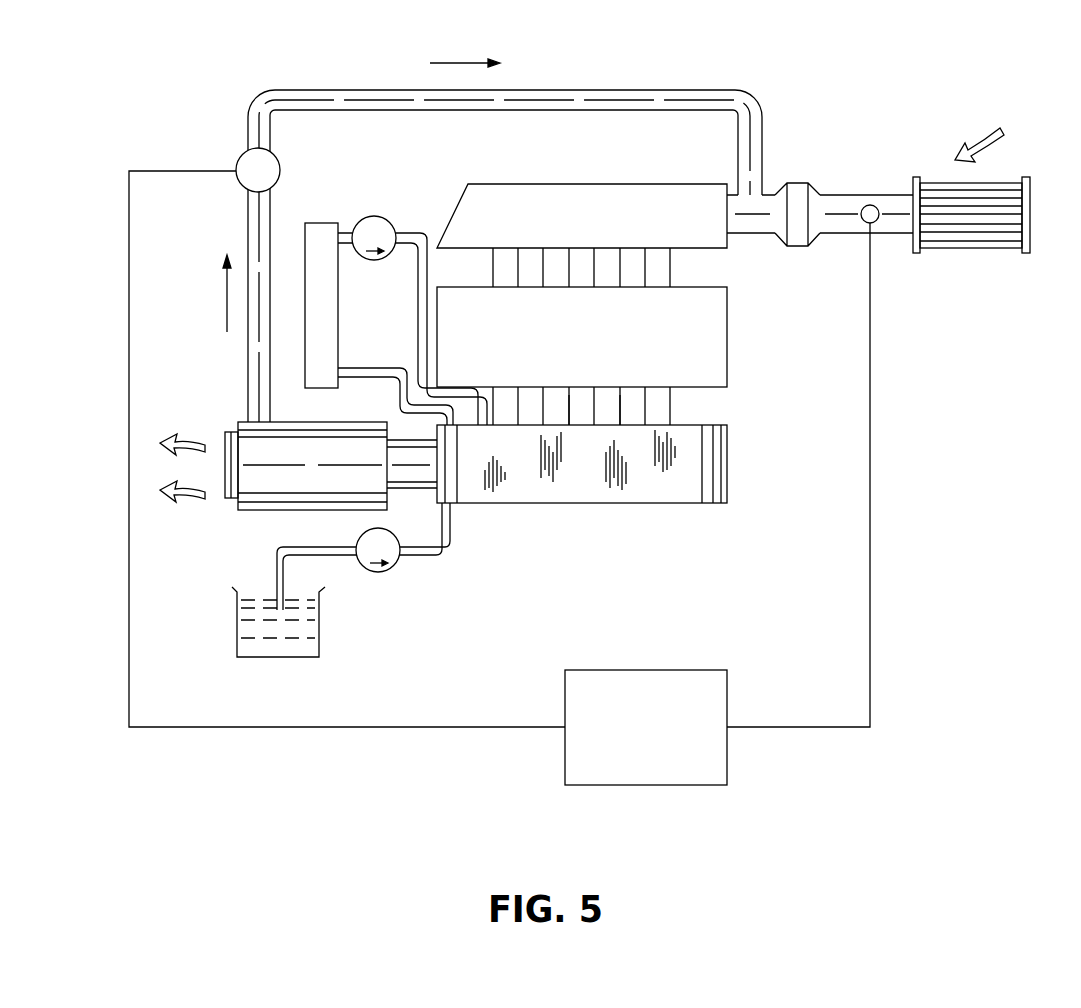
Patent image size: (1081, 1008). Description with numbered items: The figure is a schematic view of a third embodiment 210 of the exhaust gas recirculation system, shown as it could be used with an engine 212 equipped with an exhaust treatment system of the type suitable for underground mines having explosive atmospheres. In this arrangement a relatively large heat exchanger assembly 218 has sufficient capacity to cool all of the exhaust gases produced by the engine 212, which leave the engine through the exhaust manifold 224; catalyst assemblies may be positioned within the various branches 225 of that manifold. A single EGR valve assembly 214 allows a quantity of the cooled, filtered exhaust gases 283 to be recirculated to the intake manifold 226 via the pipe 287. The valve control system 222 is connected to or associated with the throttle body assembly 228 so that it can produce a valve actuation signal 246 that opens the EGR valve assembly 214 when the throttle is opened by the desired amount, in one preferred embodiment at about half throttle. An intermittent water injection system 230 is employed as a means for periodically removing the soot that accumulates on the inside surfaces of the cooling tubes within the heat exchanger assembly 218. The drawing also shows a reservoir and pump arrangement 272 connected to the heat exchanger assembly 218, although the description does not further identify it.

The third embodiment of the EGR system 210 is at (172, 82).
The pipe 287 is at (618, 90).
The EGR valve assembly 214 is at (285, 159).
The valve actuation signal 246 is at (129, 309).
The valve control system 222 is at (641, 661).
The intake manifold 226 is at (533, 183).
The throttle body assembly 228 is at (868, 205).
The engine 212 is at (738, 306).
The exhaust manifold 224 is at (686, 406).
The branches of the exhaust manifold 225 is at (575, 406).
The heat exchanger assembly 218 is at (587, 512).
The cooled, filtered exhaust gases 283 is at (195, 498).
The reservoir 272 is at (322, 222).
The intermittent water injection system 230 is at (427, 564).